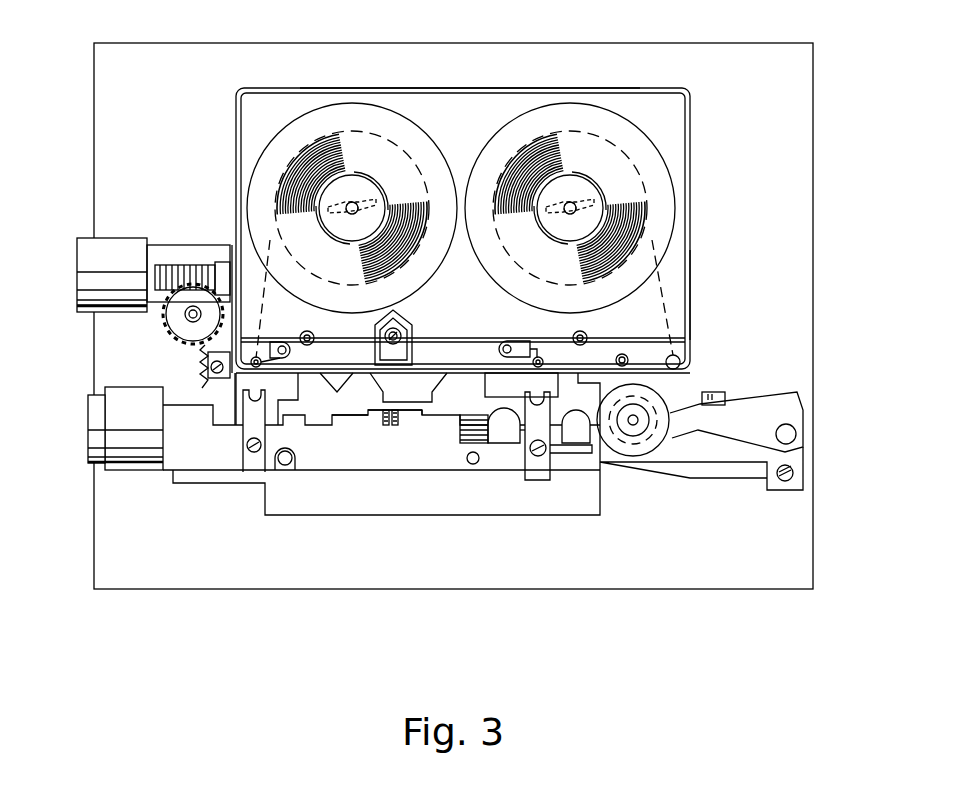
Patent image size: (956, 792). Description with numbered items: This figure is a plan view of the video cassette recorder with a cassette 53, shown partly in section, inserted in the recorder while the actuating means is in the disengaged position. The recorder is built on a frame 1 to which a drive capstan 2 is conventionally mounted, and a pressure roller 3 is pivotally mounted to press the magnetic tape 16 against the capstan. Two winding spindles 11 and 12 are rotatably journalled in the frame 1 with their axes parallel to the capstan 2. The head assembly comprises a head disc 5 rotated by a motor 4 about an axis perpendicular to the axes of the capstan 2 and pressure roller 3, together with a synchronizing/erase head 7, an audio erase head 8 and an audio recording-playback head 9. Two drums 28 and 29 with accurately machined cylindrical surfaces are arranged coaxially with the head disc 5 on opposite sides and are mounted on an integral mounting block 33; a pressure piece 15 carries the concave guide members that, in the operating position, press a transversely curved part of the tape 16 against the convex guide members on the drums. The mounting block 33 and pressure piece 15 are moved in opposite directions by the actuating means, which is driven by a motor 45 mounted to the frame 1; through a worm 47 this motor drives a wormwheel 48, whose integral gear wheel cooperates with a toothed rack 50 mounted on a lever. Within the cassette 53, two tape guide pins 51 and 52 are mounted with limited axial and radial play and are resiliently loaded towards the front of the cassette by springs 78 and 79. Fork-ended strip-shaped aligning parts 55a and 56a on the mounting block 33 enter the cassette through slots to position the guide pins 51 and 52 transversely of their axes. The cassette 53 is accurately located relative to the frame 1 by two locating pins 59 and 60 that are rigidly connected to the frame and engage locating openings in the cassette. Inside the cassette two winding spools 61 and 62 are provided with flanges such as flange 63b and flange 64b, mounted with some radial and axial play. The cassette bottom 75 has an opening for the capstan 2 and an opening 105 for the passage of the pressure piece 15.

The frame 1 is at (781, 78).
The drive capstan 2 is at (628, 360).
The pressure roller 3 is at (652, 445).
The motor 4 is at (122, 446).
The head disc 5 is at (412, 428).
The synchronizing/erase head 7 is at (378, 424).
The audio erase head 8 is at (502, 434).
The audio recording-playback head 9 is at (575, 434).
The winding spindle 11 is at (556, 197).
The winding spindle 12 is at (365, 196).
The pressure piece 15 is at (395, 352).
The magnetic tape 16 is at (690, 300).
The drum 28 is at (348, 428).
The drum 29 is at (442, 428).
The mounting block 33 is at (328, 454).
The motor 45 is at (108, 262).
The worm 47 is at (182, 265).
The wormwheel 48 is at (180, 314).
The toothed rack 50 is at (200, 362).
The tape guide pin 51 is at (252, 414).
The tape guide pin 52 is at (540, 356).
The cassette 53 is at (694, 177).
The strip-shaped part 55a is at (240, 380).
The strip-shaped part 56a is at (537, 424).
The locating pin 59 is at (305, 332).
The locating pin 60 is at (586, 333).
The winding spool 61 is at (356, 172).
The winding spool 62 is at (582, 170).
The flange 63b is at (306, 128).
The flange 64b is at (612, 130).
The cassette bottom 75 is at (668, 120).
The spring 78 is at (272, 361).
The spring 79 is at (524, 349).
The opening 105 is at (412, 330).